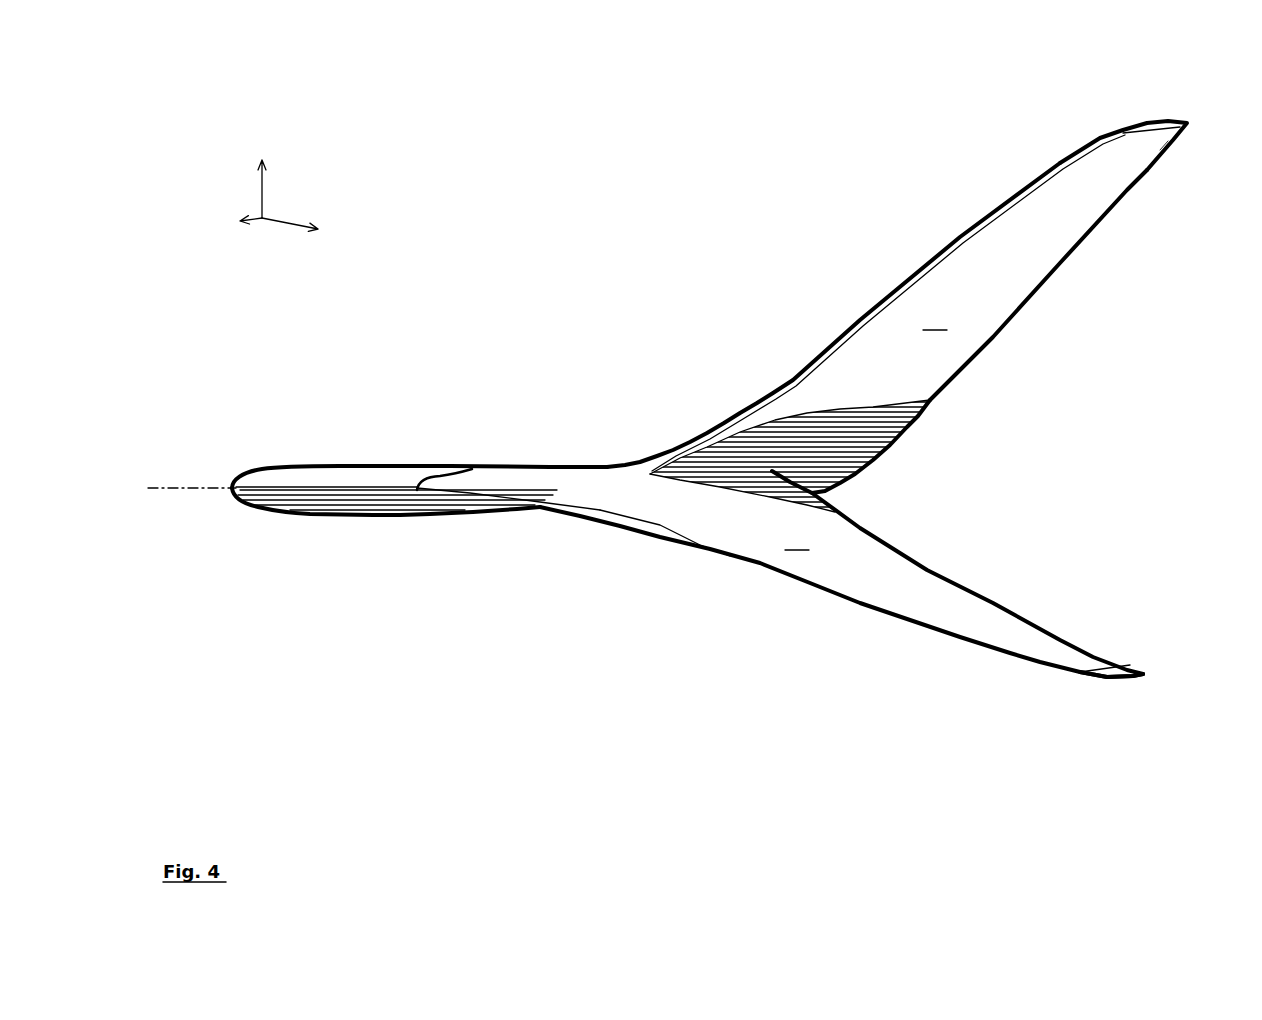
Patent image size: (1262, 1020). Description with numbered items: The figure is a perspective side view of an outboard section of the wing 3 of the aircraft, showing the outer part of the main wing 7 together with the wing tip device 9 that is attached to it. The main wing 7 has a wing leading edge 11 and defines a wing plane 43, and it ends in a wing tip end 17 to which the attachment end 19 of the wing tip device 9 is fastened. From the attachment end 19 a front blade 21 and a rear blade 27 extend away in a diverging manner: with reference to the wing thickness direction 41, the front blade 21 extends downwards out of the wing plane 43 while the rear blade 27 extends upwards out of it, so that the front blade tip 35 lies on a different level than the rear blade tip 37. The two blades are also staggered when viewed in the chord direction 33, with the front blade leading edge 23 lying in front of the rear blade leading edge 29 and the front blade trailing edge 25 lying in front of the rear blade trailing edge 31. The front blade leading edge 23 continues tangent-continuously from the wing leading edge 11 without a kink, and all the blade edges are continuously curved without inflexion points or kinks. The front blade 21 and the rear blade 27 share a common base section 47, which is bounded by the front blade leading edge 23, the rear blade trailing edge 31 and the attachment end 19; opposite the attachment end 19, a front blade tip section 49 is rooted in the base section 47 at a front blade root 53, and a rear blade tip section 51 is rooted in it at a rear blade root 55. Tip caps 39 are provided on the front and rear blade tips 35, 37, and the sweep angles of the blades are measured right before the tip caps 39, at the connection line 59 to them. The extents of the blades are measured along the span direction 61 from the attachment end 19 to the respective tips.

The wing 3 is at (516, 312).
The main wing 7 is at (263, 476).
The wing tip device 9 is at (773, 413).
The wing leading edge 11 is at (283, 492).
The wing tip end 17 is at (415, 470).
The attachment end 19 is at (437, 512).
The front blade 21 is at (841, 614).
The front blade leading edge 23 is at (807, 583).
The front blade trailing edge 25 is at (1000, 603).
The rear blade 27 is at (897, 261).
The rear blade leading edge 29 is at (1075, 262).
The rear blade trailing edge 31 is at (975, 232).
The chord direction 33 is at (243, 233).
The front blade tip 35 is at (1101, 690).
The rear blade tip 37 is at (1152, 104).
The tip caps 39 is at (1168, 130).
The wing thickness direction 41 is at (262, 177).
The wing plane 43 is at (187, 488).
The base section 47 is at (555, 481).
The front blade tip section 49 is at (900, 587).
The rear blade tip section 51 is at (990, 292).
The front blade root 53 is at (720, 510).
The rear blade root 55 is at (760, 457).
The connection line 59 is at (1157, 140).
The span direction 61 is at (297, 235).